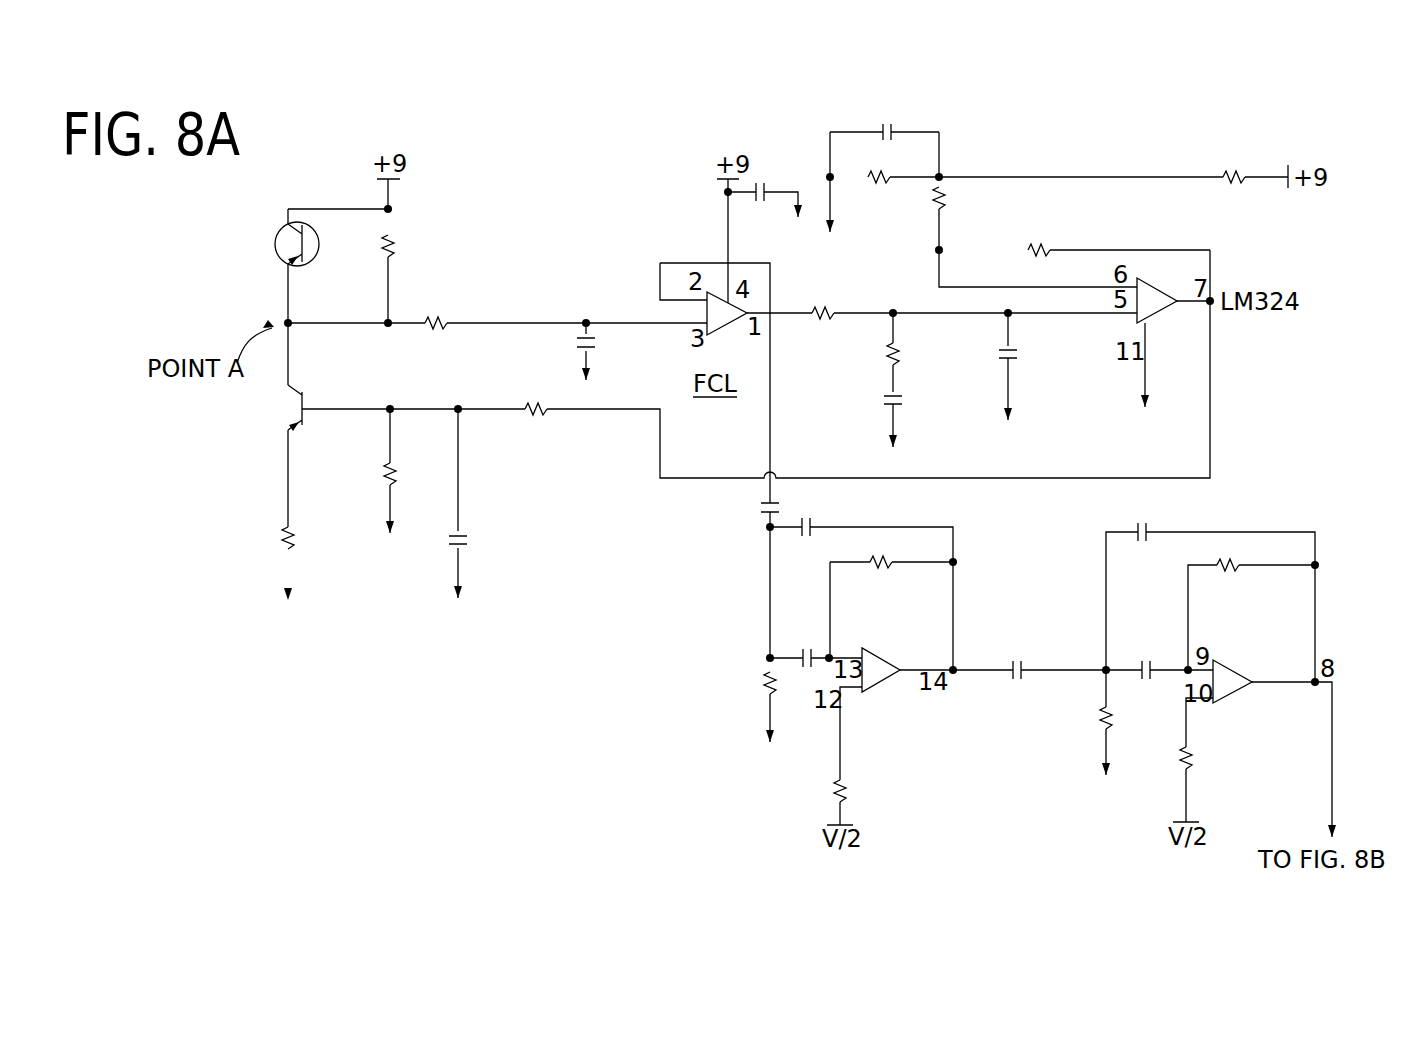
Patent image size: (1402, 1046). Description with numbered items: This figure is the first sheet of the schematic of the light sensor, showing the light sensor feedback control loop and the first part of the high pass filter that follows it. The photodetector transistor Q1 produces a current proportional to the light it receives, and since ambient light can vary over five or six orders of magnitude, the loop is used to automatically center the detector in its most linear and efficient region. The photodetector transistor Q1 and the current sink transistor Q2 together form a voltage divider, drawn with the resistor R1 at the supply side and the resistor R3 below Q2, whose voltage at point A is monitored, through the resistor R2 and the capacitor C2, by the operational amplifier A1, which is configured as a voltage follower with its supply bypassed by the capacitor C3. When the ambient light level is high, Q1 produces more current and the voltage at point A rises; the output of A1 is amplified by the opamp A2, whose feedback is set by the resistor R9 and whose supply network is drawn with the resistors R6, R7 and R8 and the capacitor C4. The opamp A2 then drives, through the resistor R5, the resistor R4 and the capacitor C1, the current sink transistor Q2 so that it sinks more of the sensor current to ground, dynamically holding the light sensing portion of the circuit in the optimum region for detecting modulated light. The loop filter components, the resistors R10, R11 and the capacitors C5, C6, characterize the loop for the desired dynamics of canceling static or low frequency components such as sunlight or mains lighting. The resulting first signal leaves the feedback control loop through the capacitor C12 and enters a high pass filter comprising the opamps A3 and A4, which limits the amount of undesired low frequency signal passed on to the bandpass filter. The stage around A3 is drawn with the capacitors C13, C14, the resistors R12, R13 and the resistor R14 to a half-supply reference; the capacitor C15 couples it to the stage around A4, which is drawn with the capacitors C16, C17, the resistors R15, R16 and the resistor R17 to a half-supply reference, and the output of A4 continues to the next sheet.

The photodetector transistor Q1 is at (276, 238).
The current sink transistor Q2 is at (273, 408).
The resistor R1 is at (407, 242).
The resistor R2 is at (436, 323).
The resistor R3 is at (293, 544).
The resistor R4 is at (404, 477).
The resistor R5 is at (528, 412).
The resistor R6 is at (871, 180).
The resistor R7 is at (937, 212).
The resistor R8 is at (1236, 182).
The resistor R9 is at (1068, 254).
The loop filter resistor R10 is at (823, 311).
The loop filter resistor R11 is at (917, 355).
The resistor R12 is at (745, 693).
The resistor R13 is at (889, 579).
The resistor R14 is at (849, 800).
The resistor R15 is at (1104, 727).
The resistor R16 is at (1258, 593).
The resistor R17 is at (1198, 765).
The capacitor C1 is at (472, 542).
The capacitor C2 is at (609, 329).
The capacitor C3 is at (763, 193).
The capacitor C4 is at (889, 114).
The loop filter capacitor C5 is at (894, 400).
The loop filter capacitor C6 is at (1024, 352).
The capacitor C12 is at (745, 519).
The capacitor C13 is at (825, 509).
The capacitor C14 is at (803, 657).
The capacitor C15 is at (1018, 670).
The capacitor C16 is at (1140, 520).
The capacitor C17 is at (1150, 670).
The operational amplifier A1 is at (727, 329).
The opamp A2 is at (1163, 315).
The opamp A3 is at (881, 680).
The opamp A4 is at (1235, 700).